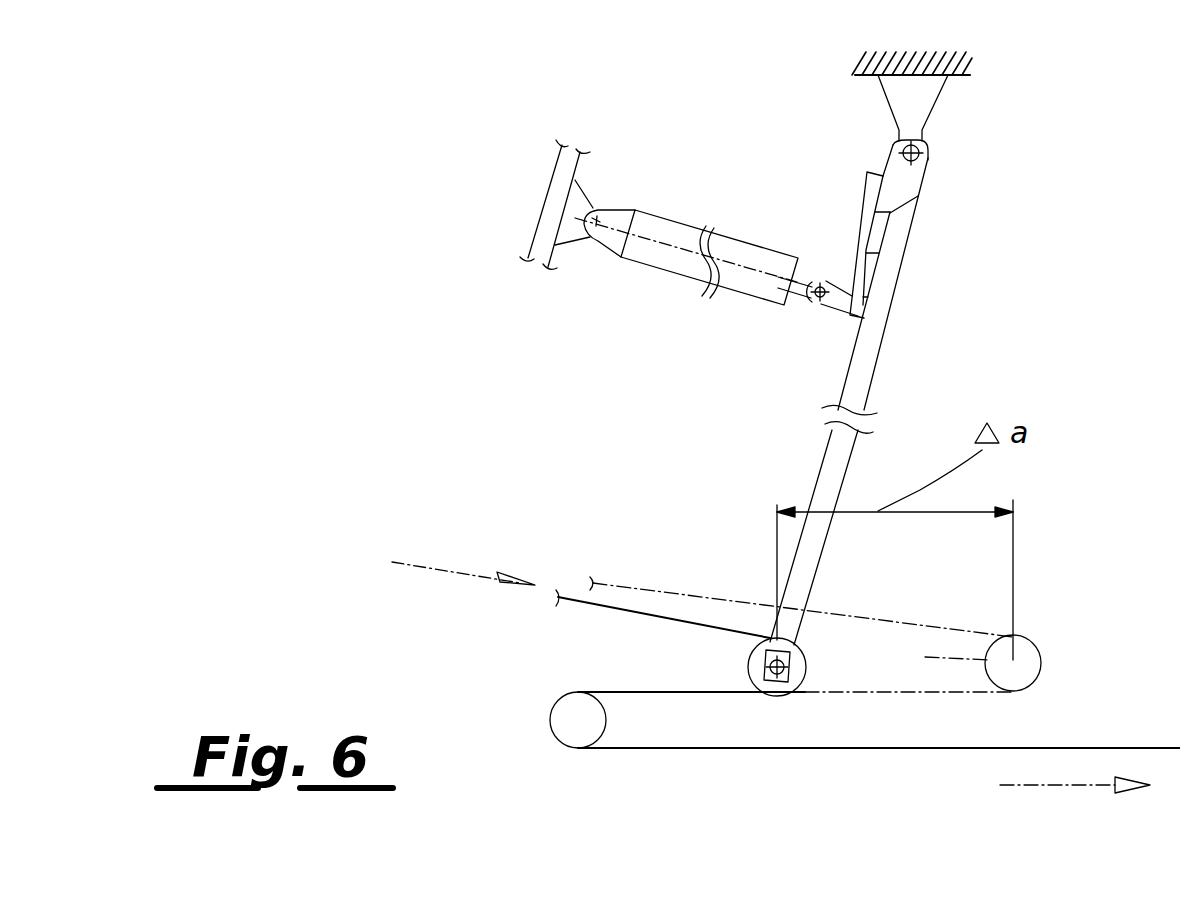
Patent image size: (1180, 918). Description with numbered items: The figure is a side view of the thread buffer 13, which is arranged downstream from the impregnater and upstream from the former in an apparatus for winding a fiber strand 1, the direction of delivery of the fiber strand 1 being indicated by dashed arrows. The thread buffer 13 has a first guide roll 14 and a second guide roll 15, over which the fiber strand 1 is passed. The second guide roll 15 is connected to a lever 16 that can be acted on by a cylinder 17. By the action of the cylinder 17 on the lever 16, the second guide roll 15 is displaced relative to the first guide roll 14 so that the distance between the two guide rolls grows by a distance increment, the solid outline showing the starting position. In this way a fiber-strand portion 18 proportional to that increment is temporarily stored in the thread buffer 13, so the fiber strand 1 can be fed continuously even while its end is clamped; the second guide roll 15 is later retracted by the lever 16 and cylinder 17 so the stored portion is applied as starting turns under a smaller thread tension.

The fiber strand 1 is at (907, 693).
The thread buffer 13 is at (432, 373).
The first guide roll 14 is at (567, 727).
The second guide roll 15 is at (806, 660).
The lever 16 is at (923, 280).
The cylinder 17 is at (675, 258).
The fiber-strand portion 18 is at (933, 614).